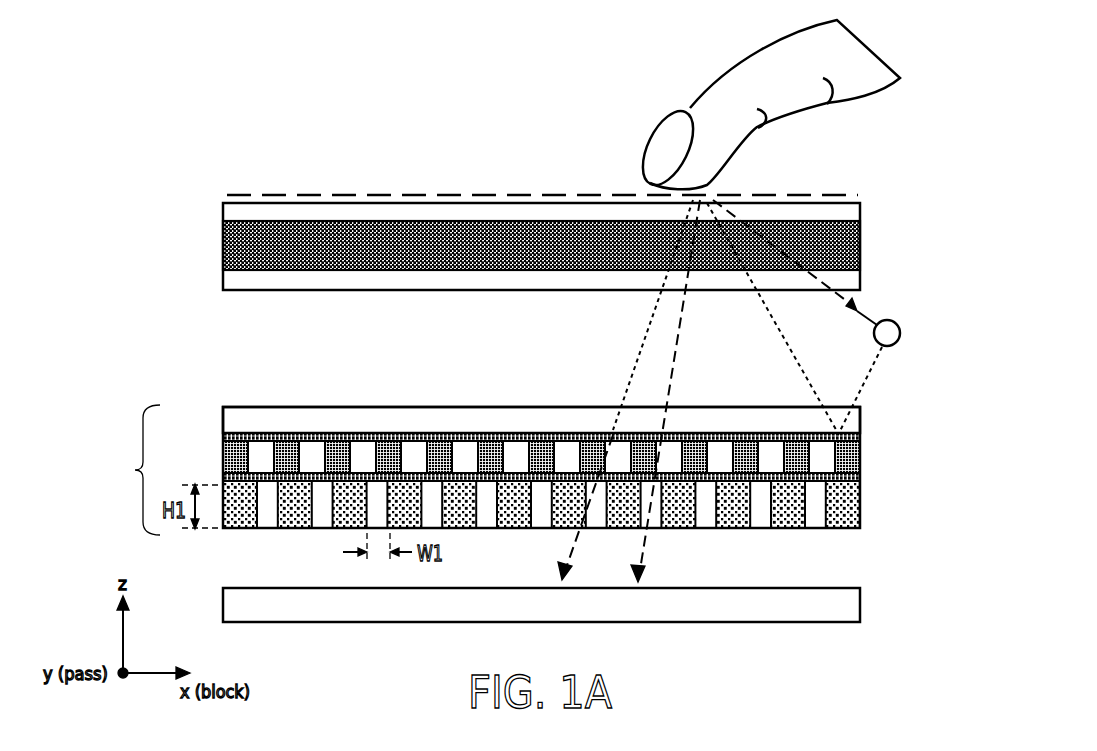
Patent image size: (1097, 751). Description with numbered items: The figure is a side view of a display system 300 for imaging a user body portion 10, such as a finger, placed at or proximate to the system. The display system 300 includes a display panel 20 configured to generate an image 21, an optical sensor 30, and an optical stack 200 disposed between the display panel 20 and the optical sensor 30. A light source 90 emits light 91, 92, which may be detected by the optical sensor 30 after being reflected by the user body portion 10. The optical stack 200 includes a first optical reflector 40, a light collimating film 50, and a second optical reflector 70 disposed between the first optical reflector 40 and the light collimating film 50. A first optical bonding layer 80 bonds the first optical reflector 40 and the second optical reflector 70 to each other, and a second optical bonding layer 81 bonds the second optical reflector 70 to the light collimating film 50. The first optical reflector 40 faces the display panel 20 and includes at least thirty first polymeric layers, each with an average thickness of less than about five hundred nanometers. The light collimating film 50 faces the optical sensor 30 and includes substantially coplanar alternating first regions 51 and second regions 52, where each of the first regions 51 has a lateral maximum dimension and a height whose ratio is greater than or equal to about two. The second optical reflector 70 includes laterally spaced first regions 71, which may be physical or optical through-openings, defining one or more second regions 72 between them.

The display system 300 is at (522, 311).
The user body portion 10 is at (693, 110).
The display panel 20 is at (848, 237).
The image 21 is at (310, 193).
The optical sensor 30 is at (852, 608).
The first optical reflector 40 is at (862, 414).
The light collimating film 50 is at (570, 531).
The first regions 51 is at (265, 522).
The second regions 52 is at (292, 522).
The second optical reflector 70 is at (568, 413).
The first regions 71 is at (722, 455).
The second regions 72 is at (746, 438).
The first optical bonding layer 80 is at (862, 437).
The second optical bonding layer 81 is at (862, 478).
The light source 90 is at (902, 330).
The light 91 is at (862, 310).
The light 92 is at (880, 372).
The optical stack 200 is at (518, 466).